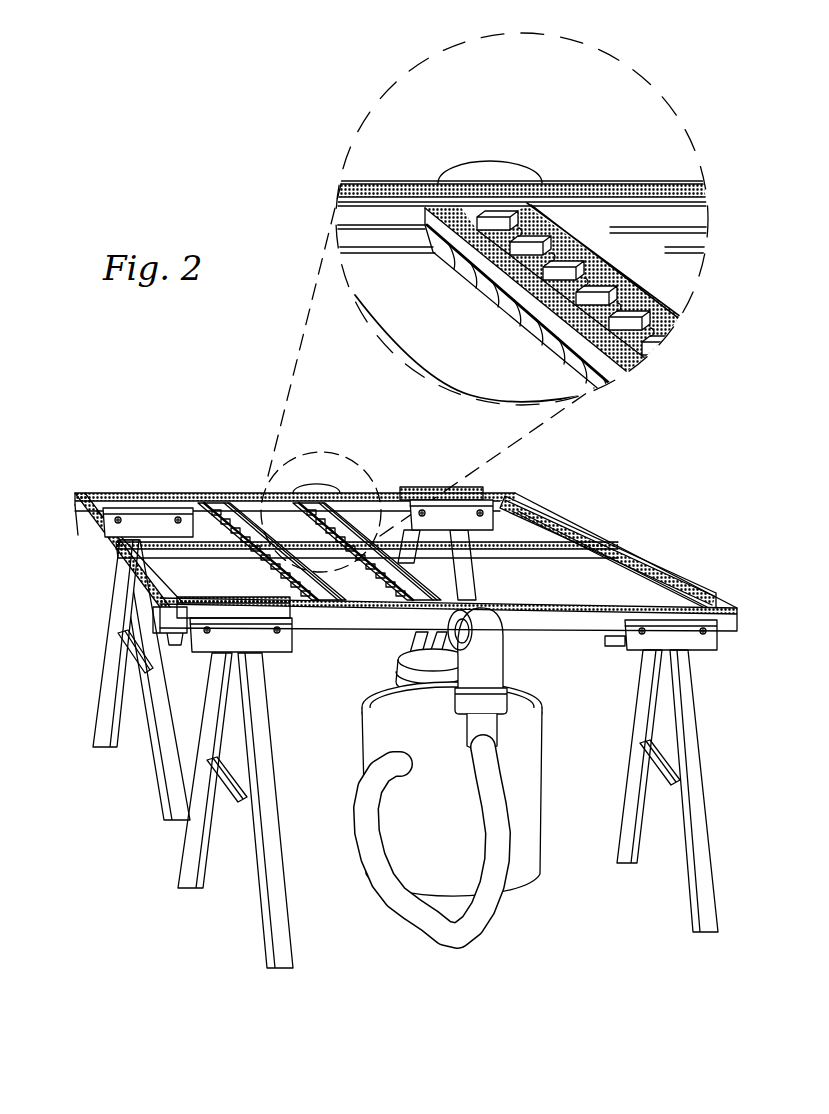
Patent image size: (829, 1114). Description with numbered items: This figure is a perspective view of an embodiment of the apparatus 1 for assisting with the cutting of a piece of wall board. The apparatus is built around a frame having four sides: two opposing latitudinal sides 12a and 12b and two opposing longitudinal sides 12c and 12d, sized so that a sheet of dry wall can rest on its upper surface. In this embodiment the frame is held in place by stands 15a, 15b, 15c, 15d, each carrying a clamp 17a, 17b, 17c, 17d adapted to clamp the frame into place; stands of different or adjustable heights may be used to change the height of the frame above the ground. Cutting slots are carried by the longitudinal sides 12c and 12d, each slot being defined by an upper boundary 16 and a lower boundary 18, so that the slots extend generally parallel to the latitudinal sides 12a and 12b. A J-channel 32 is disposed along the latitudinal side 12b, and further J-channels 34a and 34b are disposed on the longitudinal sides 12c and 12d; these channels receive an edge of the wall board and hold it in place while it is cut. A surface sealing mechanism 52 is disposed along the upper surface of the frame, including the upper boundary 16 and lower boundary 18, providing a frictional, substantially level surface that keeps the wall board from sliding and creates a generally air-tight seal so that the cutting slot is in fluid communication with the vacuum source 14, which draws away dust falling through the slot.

The wall board cutting apparatus 1 is at (76, 482).
The latitudinal side 12a is at (82, 535).
The latitudinal side 12b is at (722, 603).
The longitudinal side 12c is at (323, 612).
The longitudinal side 12d is at (165, 494).
The vacuum source 14 is at (323, 484).
The stand 15a is at (92, 738).
The stand 15b is at (180, 880).
The stand 15c is at (708, 900).
The stand 15d is at (470, 566).
The upper boundary 16 is at (353, 557).
The clamp 17a is at (132, 518).
The clamp 17b is at (272, 652).
The clamp 17c is at (708, 637).
The clamp 17d is at (495, 495).
The lower boundary 18 is at (338, 503).
The J-channel 32 is at (637, 548).
The J-channel 34a is at (260, 610).
The J-channel 34b is at (437, 490).
The surface sealing mechanism 52 is at (592, 193).